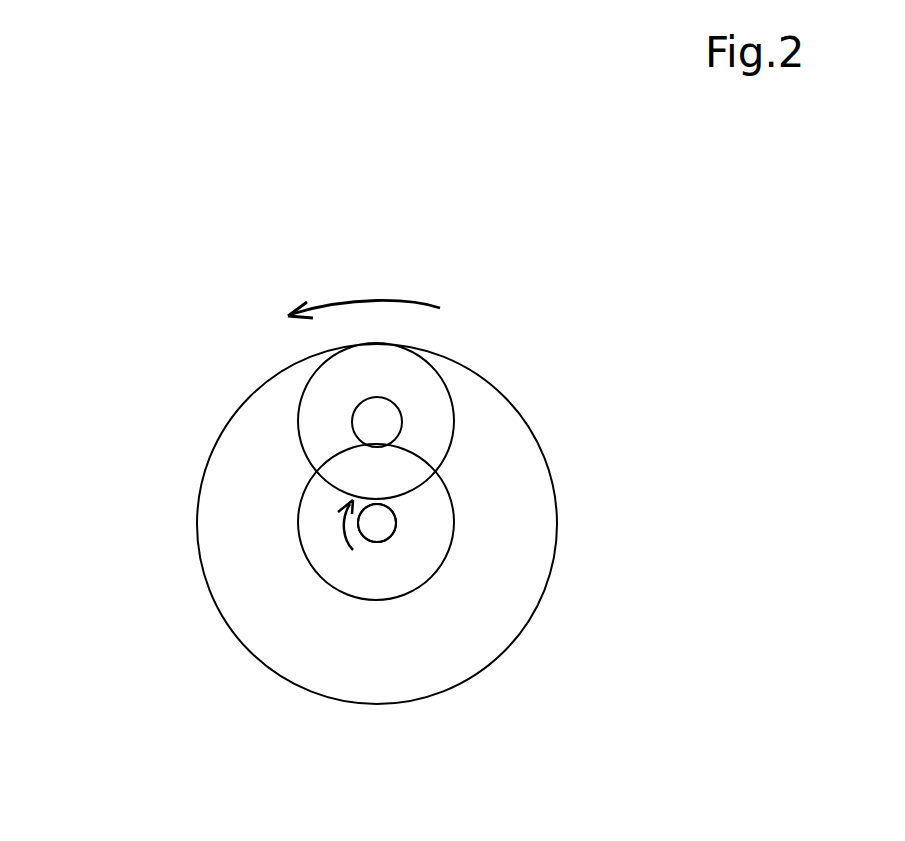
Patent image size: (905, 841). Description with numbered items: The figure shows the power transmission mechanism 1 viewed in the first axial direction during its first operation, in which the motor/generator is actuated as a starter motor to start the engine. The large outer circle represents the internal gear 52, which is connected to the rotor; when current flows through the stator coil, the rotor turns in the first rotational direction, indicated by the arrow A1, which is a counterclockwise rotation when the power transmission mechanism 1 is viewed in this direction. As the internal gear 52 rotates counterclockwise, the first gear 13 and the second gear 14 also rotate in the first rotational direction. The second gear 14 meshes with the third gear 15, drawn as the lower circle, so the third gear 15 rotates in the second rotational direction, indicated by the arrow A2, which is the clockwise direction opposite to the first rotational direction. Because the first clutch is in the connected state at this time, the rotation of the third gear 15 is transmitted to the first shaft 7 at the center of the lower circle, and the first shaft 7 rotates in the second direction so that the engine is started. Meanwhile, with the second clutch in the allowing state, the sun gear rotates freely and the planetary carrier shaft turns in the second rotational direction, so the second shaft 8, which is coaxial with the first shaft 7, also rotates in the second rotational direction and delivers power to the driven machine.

The power transmission mechanism 1 is at (120, 352).
The internal gear 52 is at (253, 390).
The first gear 13 is at (455, 432).
The third gear 15 is at (448, 568).
The second gear 14 is at (352, 421).
The first shaft 7 is at (376, 545).
The second shaft 8 is at (377, 523).
The first rotational direction A1 is at (398, 298).
The second rotational direction A2 is at (345, 525).